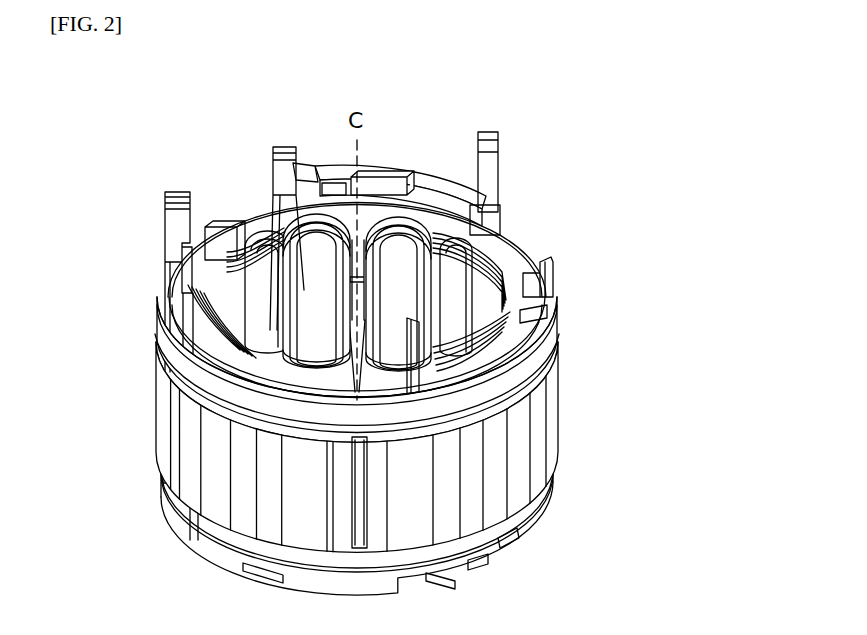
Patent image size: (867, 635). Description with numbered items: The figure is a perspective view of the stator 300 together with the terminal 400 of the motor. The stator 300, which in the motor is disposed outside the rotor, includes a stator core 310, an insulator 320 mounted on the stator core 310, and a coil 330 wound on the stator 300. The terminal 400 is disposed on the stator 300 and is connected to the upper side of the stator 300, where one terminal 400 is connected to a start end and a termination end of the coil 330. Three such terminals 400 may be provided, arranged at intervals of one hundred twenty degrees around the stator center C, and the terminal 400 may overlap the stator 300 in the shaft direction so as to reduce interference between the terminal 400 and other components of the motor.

The stator 300 is at (424, 335).
The stator core 310 is at (556, 393).
The insulator 320 is at (528, 237).
The coil 330 is at (480, 232).
The terminal 400 is at (388, 154).